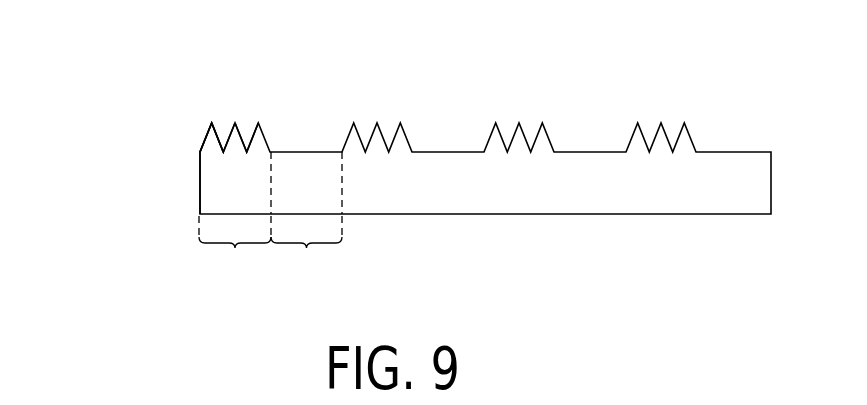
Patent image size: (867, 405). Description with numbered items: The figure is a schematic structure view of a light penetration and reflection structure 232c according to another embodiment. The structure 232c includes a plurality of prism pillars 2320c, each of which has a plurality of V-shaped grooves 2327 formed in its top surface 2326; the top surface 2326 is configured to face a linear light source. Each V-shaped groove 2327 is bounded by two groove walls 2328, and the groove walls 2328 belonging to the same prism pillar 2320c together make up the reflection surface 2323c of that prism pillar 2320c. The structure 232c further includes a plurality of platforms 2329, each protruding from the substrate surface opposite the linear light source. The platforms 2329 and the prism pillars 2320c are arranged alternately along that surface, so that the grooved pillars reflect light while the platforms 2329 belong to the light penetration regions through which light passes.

The light penetration and reflection structure 232c is at (788, 53).
The reflection surface 2323c is at (213, 146).
The top surface 2326 is at (213, 123).
The V-shaped groove 2327 is at (221, 125).
The groove wall 2328 is at (243, 132).
The prism pillar 2320c is at (226, 219).
The platform 2329 is at (309, 219).